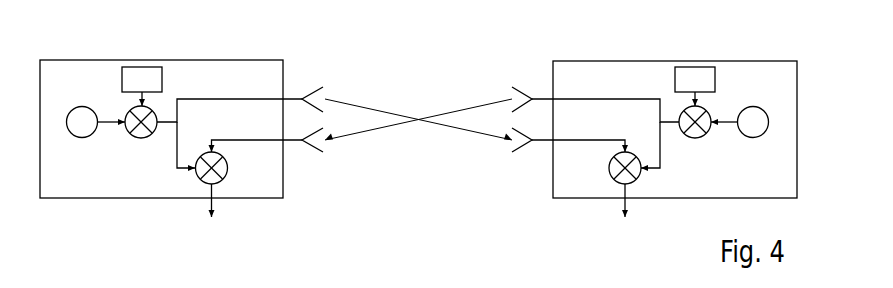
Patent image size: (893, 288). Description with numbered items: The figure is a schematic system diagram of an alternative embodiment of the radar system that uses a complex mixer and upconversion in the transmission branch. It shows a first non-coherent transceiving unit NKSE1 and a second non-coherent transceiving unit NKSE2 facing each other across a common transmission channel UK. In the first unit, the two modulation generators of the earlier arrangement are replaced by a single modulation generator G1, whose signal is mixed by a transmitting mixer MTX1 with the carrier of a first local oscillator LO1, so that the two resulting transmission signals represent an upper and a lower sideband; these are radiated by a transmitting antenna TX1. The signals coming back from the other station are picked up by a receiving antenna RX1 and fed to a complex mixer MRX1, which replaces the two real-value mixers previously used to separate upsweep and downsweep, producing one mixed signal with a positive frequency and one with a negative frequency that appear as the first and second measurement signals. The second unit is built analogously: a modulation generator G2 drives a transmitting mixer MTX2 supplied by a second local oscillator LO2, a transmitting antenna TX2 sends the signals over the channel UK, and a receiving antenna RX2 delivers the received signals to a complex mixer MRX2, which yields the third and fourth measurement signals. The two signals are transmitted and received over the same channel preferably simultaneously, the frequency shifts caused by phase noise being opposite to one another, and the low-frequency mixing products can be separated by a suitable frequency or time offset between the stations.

The first non-coherent transceiving unit NKSE1 is at (161, 117).
The second non-coherent transceiving unit NKSE2 is at (675, 117).
The modulation generator G1 is at (142, 86).
The modulation generator G2 is at (695, 86).
The first local oscillator LO1 is at (96, 122).
The second local oscillator LO2 is at (740, 122).
The transmitting mixer MTX1 is at (213, 135).
The transmitting mixer MTX2 is at (621, 135).
The complex mixer MRX1 is at (234, 179).
The complex mixer MRX2 is at (601, 179).
The transmitting antenna TX1 is at (315, 91).
The transmitting antenna TX2 is at (521, 91).
The receiving antenna RX1 is at (316, 150).
The receiving antenna RX2 is at (522, 150).
The transmission channel UK is at (417, 221).